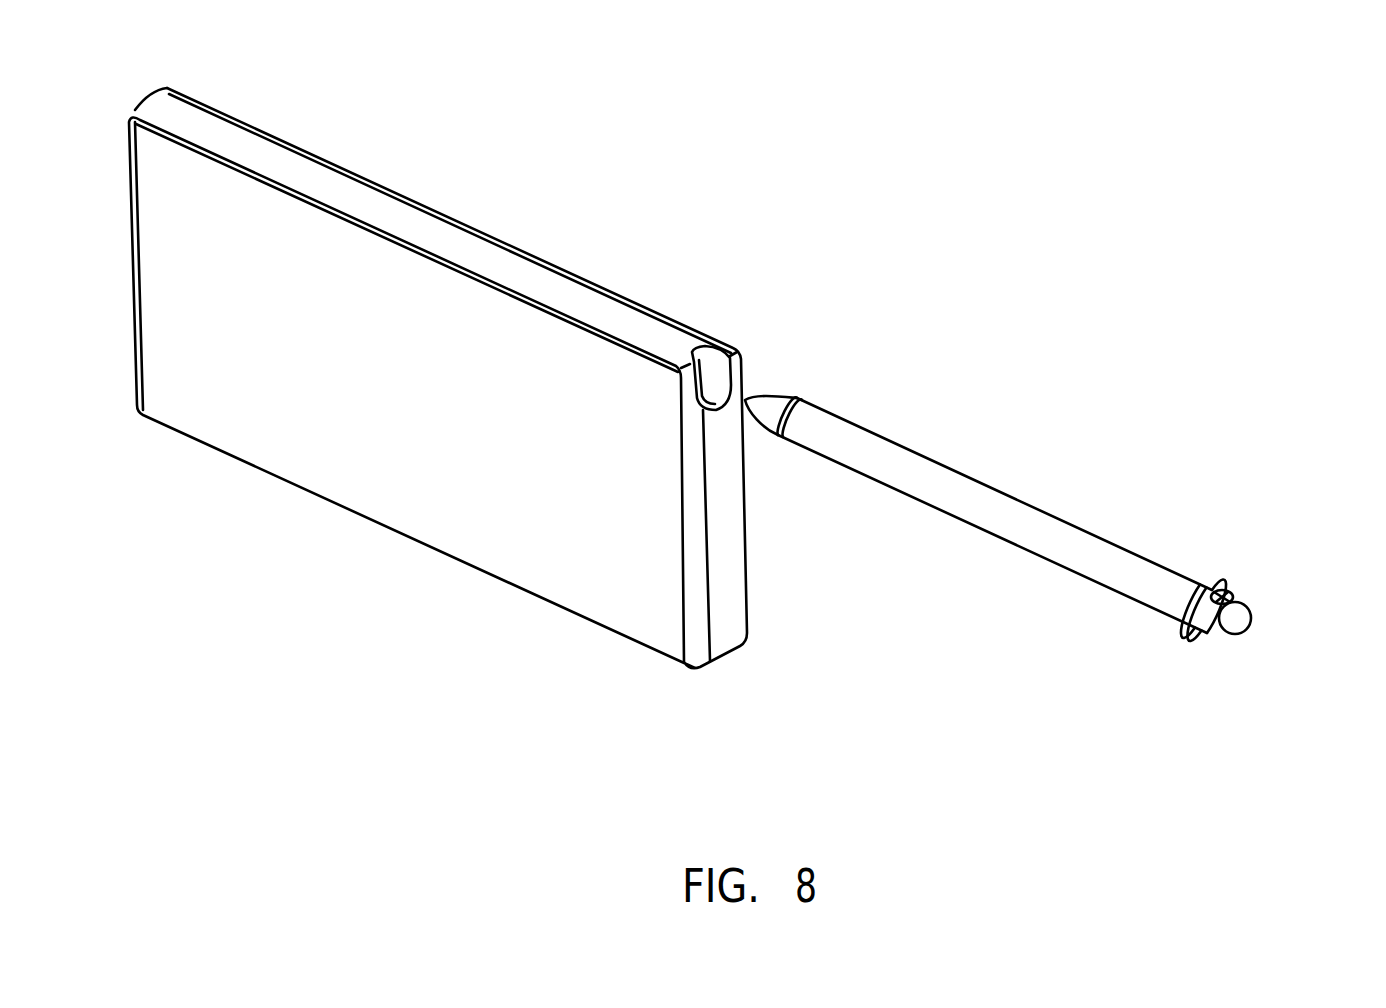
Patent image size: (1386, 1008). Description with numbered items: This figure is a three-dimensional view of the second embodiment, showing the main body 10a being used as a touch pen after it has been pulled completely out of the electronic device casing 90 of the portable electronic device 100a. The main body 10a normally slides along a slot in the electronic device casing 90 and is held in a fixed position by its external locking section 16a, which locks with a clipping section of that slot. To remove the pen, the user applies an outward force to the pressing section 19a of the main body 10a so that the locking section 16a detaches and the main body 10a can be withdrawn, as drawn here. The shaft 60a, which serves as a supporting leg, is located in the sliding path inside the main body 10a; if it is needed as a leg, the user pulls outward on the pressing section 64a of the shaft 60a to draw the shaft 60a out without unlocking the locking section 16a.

The portable electronic device 100a is at (93, 114).
The electronic device casing 90 is at (376, 200).
The main body 10a is at (990, 505).
The locking section 16a is at (787, 395).
The pressing section 19a is at (1217, 590).
The pressing section 64a is at (1232, 594).
The shaft 60a is at (1238, 622).